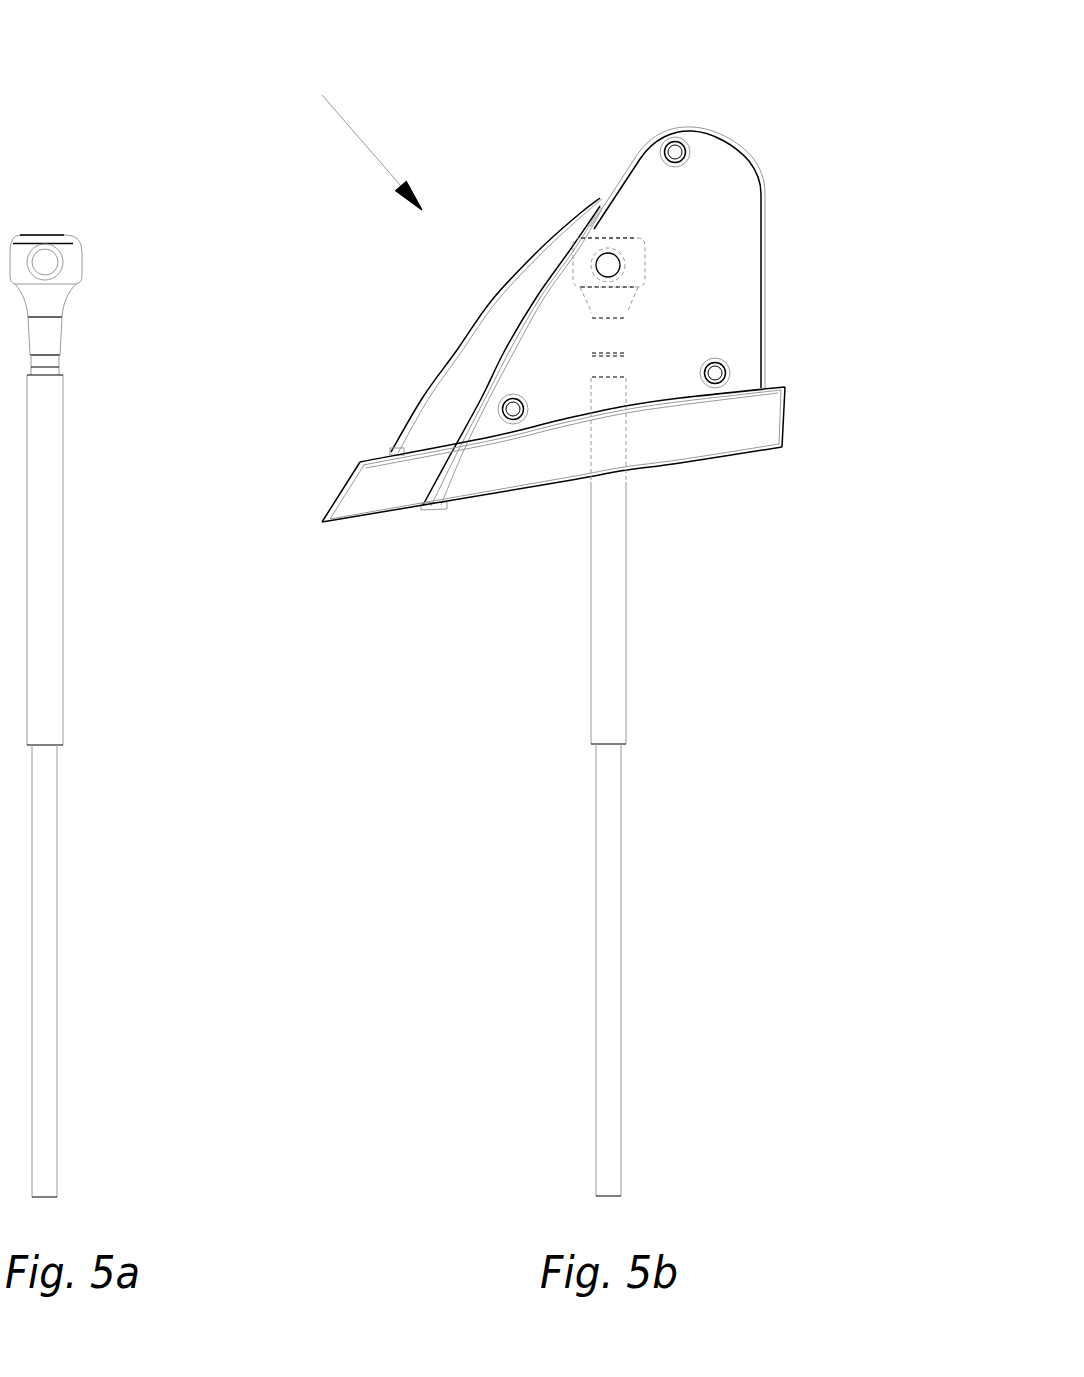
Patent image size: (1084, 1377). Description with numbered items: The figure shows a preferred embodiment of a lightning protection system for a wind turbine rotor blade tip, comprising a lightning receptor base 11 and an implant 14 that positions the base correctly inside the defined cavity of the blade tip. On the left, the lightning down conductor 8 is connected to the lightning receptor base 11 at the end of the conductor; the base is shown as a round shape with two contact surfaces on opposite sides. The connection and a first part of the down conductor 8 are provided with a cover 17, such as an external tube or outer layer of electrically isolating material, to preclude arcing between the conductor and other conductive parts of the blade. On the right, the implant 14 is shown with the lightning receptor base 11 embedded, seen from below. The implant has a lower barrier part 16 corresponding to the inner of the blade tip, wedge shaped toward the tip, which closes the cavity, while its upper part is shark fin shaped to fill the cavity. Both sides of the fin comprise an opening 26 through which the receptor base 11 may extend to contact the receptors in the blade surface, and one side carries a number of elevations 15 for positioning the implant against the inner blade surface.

In FIG. 5A, the lightning down conductor 8 is at (50, 965).
In FIG. 5B, the lightning down conductor 8 is at (613, 990).
In FIG. 5A, the lightning receptor base 11 is at (50, 268).
In FIG. 5B, the lightning receptor base 11 is at (578, 228).
In FIG. 5B, the implant 14 is at (362, 132).
In FIG. 5B, the elevations 15 is at (685, 142).
In FIG. 5B, the lower barrier part 16 is at (702, 450).
In FIG. 5A, the cover 17 is at (53, 665).
In FIG. 5B, the cover 17 is at (608, 555).
In FIG. 5B, the opening 26 is at (620, 265).